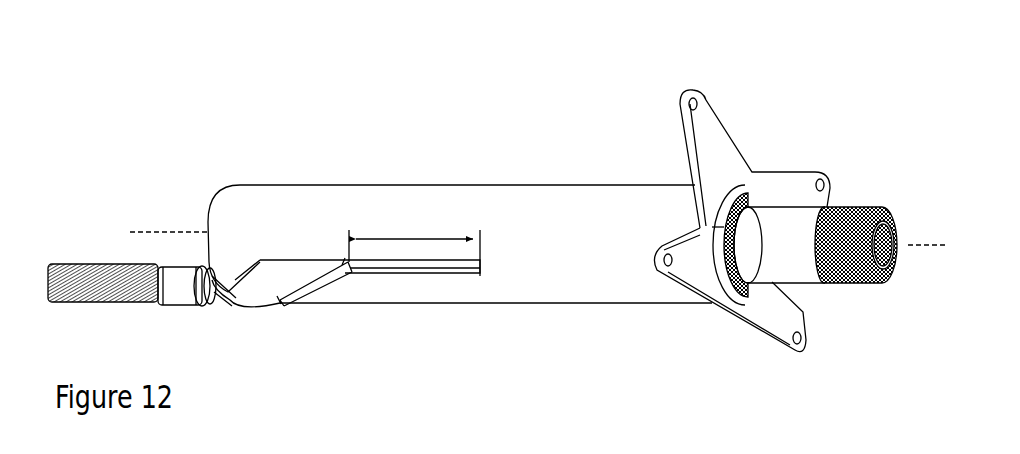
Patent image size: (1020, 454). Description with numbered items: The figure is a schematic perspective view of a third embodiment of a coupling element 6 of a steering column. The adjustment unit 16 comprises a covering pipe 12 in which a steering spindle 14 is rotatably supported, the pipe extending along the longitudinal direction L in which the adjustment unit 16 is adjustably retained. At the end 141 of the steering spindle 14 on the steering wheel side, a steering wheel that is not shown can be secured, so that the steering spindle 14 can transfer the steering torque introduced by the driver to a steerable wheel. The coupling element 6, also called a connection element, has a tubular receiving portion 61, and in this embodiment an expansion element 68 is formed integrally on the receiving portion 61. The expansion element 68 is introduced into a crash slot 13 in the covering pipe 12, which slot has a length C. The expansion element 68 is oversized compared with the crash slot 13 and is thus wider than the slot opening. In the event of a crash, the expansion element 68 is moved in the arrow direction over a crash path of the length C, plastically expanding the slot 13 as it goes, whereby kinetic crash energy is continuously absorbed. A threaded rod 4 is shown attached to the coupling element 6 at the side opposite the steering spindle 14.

The threaded rod 4 is at (115, 302).
The coupling element 6 is at (172, 311).
The receiving portion 61 is at (178, 288).
The covering pipe 12 is at (612, 207).
The crash slot 13 is at (416, 266).
The steering spindle 14 is at (806, 220).
The end of the steering spindle on the steering wheel side 141 is at (858, 210).
The adjustment unit 16 is at (504, 170).
The expansion element 68 is at (275, 272).
The length of the crash slot C is at (422, 238).
The longitudinal direction L is at (937, 243).